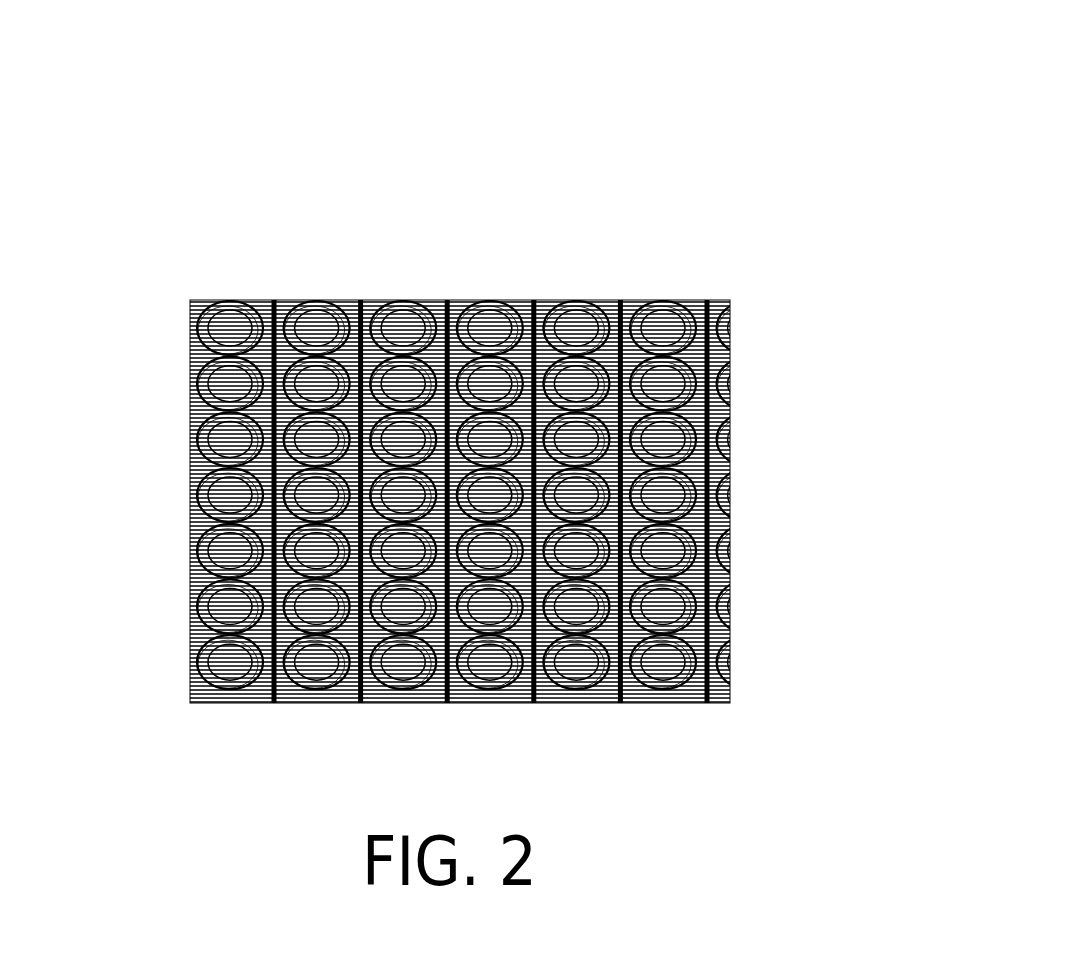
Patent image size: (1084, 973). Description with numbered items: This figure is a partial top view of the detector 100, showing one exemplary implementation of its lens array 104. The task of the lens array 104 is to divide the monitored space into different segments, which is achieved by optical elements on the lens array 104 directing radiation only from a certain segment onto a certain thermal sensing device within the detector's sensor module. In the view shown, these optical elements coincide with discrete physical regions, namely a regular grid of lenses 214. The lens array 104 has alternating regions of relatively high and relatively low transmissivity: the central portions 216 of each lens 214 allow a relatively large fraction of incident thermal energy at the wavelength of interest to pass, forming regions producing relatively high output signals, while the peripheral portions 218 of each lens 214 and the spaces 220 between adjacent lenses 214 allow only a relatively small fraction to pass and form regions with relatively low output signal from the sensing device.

The detector 100 is at (728, 117).
The lens array 104 is at (365, 248).
The lens 214 is at (405, 384).
The central portion 216 is at (410, 553).
The peripheral portion 218 is at (512, 608).
The space 220 is at (627, 487).